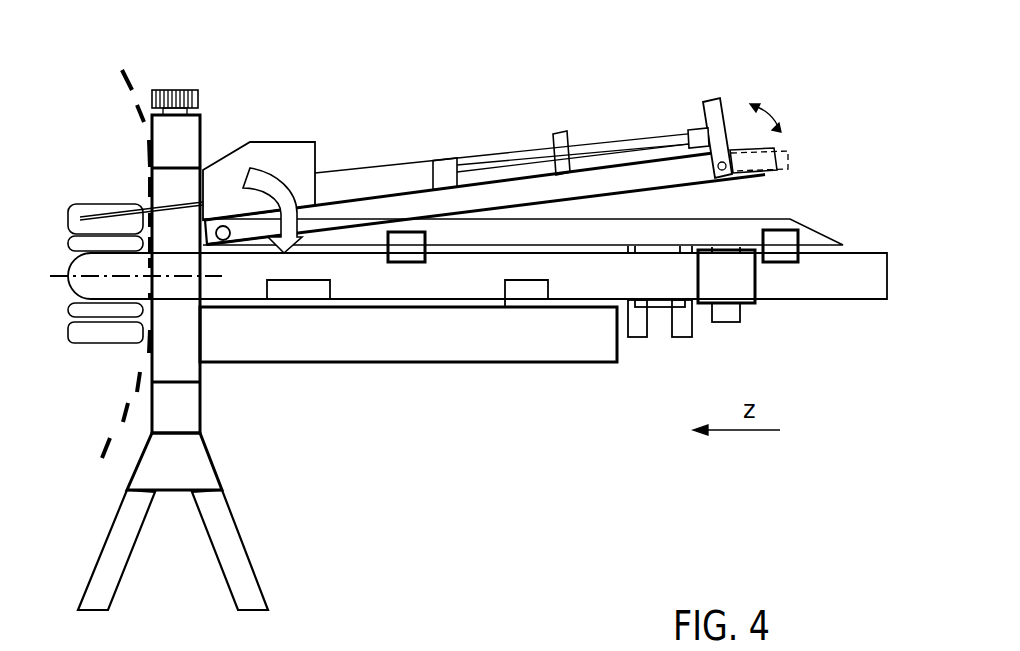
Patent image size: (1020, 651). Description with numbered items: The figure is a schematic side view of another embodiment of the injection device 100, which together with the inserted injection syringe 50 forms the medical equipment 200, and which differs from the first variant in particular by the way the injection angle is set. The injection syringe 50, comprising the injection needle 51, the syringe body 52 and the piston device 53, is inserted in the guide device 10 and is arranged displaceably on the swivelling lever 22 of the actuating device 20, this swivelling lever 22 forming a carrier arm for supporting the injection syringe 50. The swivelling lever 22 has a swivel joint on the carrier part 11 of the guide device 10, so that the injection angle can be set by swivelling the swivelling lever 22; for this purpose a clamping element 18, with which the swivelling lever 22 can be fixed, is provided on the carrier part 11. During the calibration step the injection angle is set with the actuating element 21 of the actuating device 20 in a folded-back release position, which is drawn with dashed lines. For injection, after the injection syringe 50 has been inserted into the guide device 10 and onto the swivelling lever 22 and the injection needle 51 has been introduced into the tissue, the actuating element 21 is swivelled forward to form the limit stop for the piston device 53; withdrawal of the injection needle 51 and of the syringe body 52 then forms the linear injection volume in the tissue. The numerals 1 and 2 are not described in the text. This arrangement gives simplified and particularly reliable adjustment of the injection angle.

The stand 1 is at (112, 125).
The workpiece 2 is at (108, 206).
The guide device 10 is at (305, 171).
The carrier part 11 is at (235, 187).
The clamping element 18 is at (273, 173).
The actuating device 20 is at (759, 96).
The actuating element 21 is at (715, 143).
The swivelling lever 22 is at (642, 178).
The injection syringe 50 is at (356, 152).
The injection needle 51 is at (134, 208).
The syringe body 52 is at (397, 187).
The piston device 53 is at (548, 150).
The injection device 100 is at (420, 76).
The medical equipment 200 is at (796, 91).